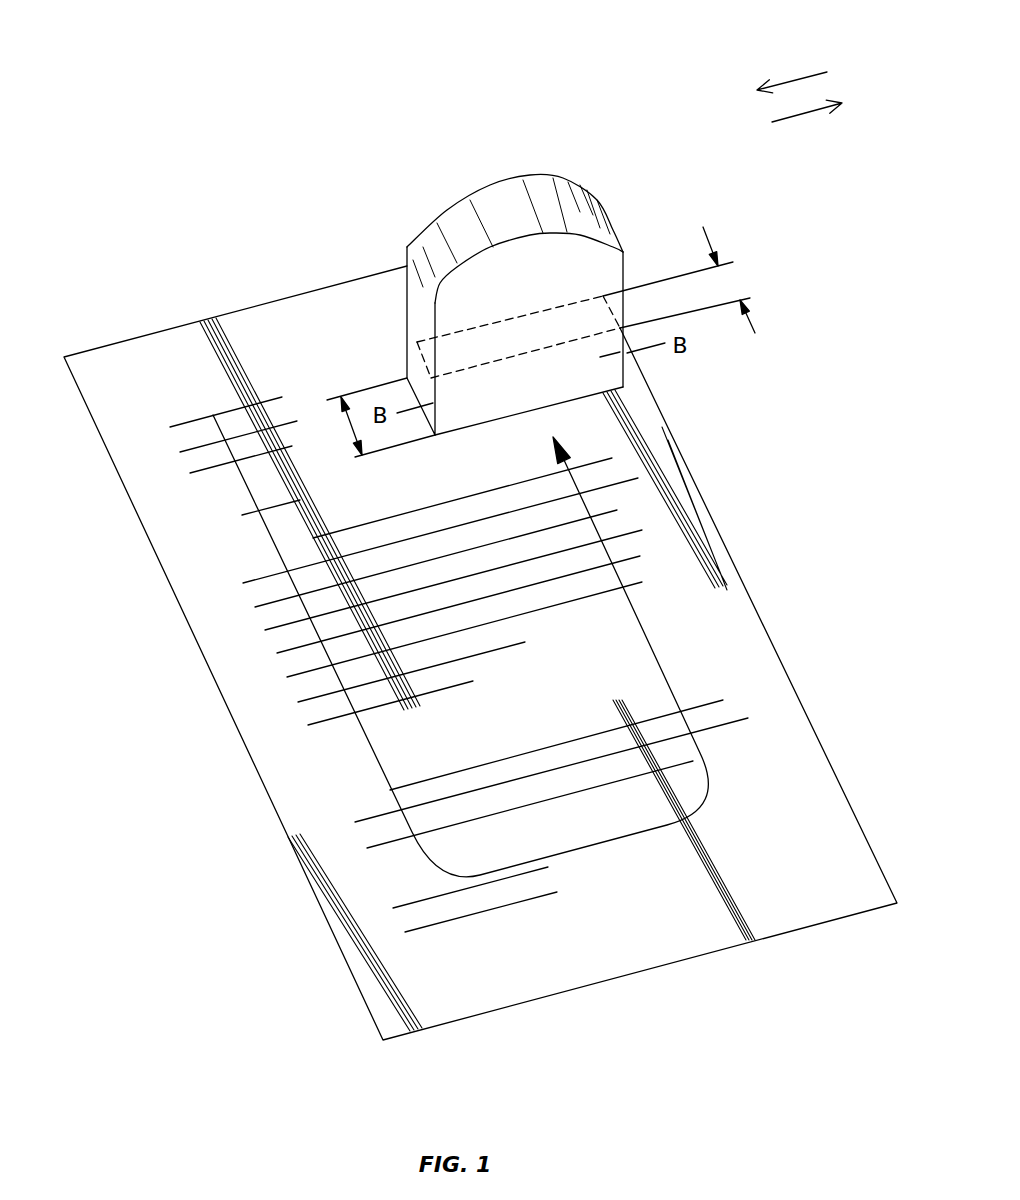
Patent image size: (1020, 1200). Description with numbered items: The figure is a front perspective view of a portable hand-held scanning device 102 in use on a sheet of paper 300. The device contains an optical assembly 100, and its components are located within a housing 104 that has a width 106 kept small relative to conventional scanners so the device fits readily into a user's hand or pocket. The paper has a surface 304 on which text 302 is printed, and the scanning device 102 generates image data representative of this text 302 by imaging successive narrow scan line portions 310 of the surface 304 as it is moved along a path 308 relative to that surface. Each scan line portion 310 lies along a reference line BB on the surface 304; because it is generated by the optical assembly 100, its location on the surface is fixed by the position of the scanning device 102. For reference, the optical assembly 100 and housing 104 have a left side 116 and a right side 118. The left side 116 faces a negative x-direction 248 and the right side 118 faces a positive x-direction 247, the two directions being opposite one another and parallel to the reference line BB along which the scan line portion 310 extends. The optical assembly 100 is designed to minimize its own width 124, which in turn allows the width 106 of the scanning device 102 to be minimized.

The optical assembly 100 is at (450, 321).
The scanning device 102 is at (528, 275).
The housing 104 is at (487, 180).
The width 106 is at (350, 428).
The left side 116 is at (412, 358).
The right side 118 is at (613, 306).
The width 124 is at (758, 332).
The positive x-direction 247 is at (792, 121).
The negative x-direction 248 is at (817, 72).
The sheet of paper 300 is at (766, 533).
The text 302 is at (524, 644).
The surface 304 is at (610, 904).
The path 308 is at (703, 753).
The scan line portion 310 is at (484, 394).